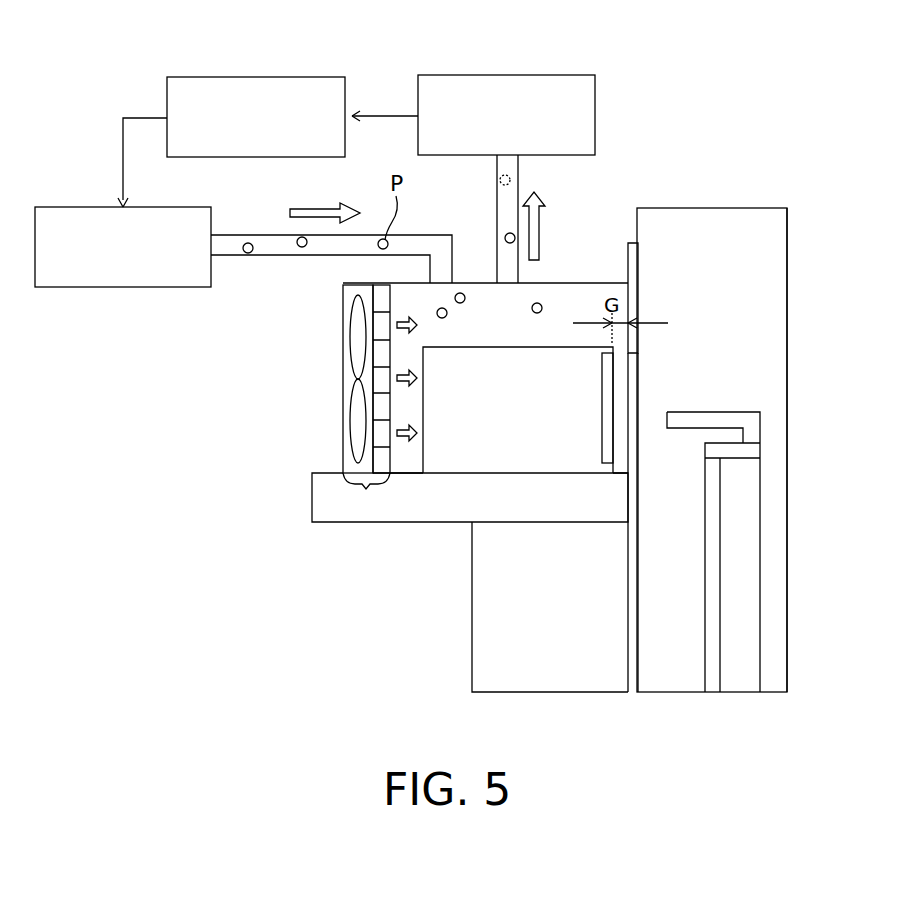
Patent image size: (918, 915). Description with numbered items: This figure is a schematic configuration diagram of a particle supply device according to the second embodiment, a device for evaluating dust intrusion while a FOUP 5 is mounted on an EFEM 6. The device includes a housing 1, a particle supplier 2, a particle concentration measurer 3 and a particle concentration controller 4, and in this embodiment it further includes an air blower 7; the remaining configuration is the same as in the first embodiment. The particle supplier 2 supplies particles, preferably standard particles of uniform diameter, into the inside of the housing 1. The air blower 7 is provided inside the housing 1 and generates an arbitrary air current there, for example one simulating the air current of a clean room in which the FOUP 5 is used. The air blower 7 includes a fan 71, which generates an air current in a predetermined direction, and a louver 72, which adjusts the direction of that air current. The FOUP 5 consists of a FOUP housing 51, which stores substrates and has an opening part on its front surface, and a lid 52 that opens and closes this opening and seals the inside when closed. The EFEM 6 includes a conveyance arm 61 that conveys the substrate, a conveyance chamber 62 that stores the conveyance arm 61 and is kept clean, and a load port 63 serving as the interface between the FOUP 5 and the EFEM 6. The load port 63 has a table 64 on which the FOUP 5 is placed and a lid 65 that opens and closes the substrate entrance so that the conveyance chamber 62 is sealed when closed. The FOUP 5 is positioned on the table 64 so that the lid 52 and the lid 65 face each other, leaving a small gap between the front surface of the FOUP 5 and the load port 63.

The housing 1 is at (352, 400).
The particle supplier 2 is at (79, 207).
The particle concentration measurer 3 is at (463, 75).
The particle concentration controller 4 is at (211, 77).
The FOUP 5 is at (522, 478).
The EFEM 6 is at (716, 199).
The air blower 7 is at (366, 495).
The FOUP housing 51 is at (452, 452).
The lid 52 is at (603, 407).
The conveyance arm 61 is at (760, 420).
The conveyance chamber 62 is at (787, 340).
The load port 63 is at (628, 268).
The table 64 is at (385, 510).
The lid 65 is at (632, 398).
The fan 71 is at (357, 340).
The louver 72 is at (381, 286).